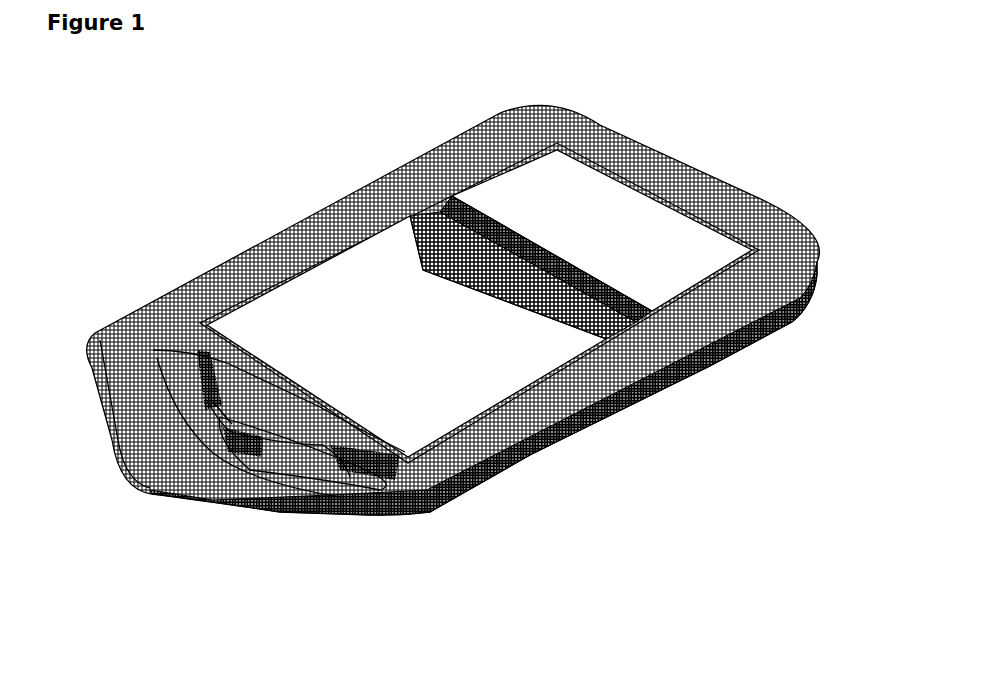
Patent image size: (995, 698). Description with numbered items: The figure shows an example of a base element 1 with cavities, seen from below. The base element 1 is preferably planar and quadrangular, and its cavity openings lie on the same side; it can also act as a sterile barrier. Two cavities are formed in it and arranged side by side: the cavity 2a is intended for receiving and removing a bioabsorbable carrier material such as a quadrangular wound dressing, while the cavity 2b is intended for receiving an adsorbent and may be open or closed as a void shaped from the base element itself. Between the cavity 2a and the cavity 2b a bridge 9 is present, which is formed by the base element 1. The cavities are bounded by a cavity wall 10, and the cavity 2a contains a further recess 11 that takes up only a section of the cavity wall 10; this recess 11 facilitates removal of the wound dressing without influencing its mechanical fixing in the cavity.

The base element 1 is at (280, 257).
The cavity wall 10 is at (313, 263).
The cavity 2a is at (413, 350).
The cavity 2b is at (598, 225).
The bridge 9 is at (660, 338).
The recess 11 is at (260, 427).